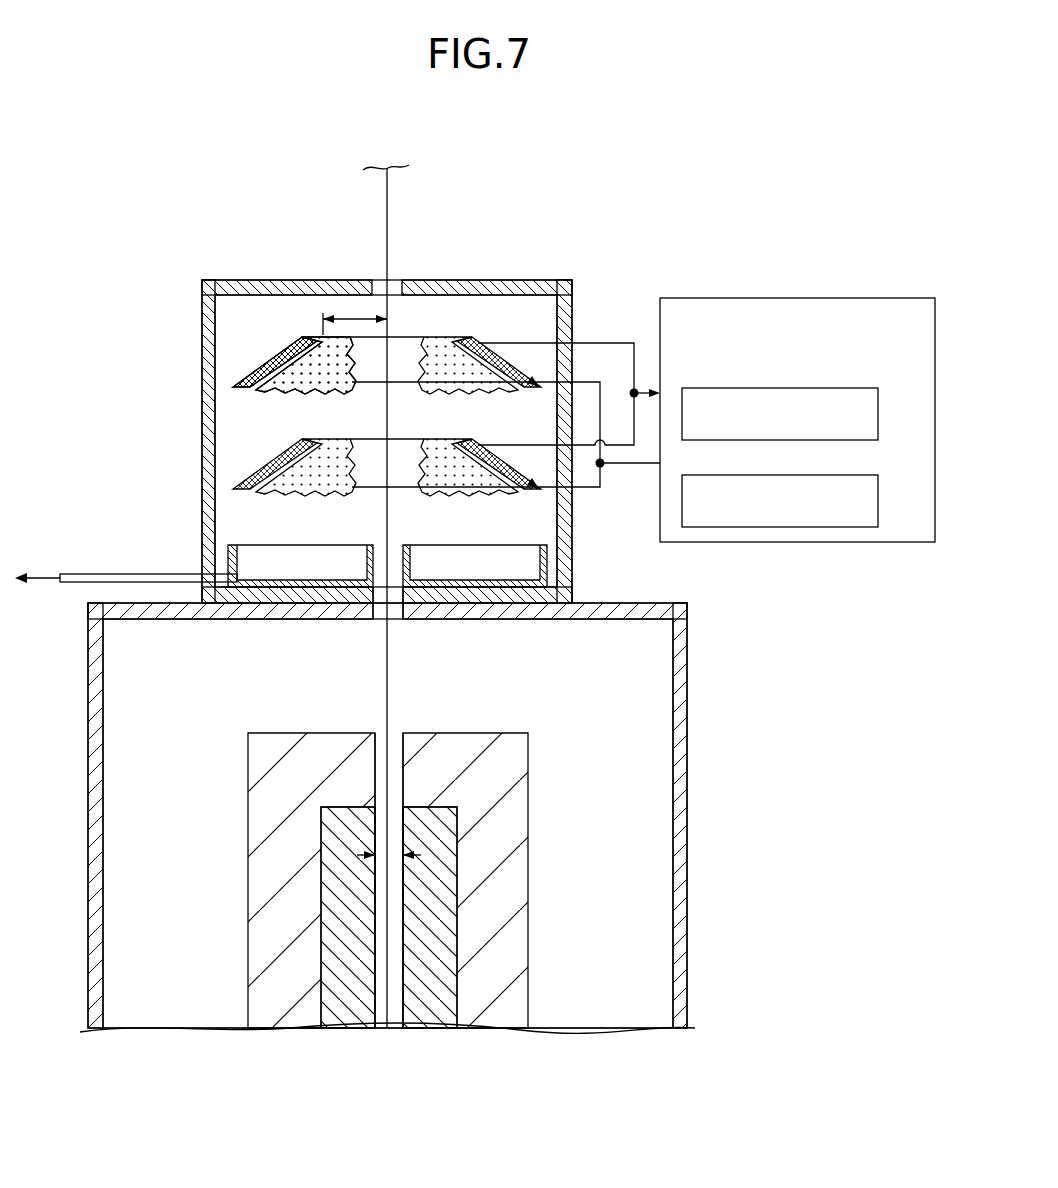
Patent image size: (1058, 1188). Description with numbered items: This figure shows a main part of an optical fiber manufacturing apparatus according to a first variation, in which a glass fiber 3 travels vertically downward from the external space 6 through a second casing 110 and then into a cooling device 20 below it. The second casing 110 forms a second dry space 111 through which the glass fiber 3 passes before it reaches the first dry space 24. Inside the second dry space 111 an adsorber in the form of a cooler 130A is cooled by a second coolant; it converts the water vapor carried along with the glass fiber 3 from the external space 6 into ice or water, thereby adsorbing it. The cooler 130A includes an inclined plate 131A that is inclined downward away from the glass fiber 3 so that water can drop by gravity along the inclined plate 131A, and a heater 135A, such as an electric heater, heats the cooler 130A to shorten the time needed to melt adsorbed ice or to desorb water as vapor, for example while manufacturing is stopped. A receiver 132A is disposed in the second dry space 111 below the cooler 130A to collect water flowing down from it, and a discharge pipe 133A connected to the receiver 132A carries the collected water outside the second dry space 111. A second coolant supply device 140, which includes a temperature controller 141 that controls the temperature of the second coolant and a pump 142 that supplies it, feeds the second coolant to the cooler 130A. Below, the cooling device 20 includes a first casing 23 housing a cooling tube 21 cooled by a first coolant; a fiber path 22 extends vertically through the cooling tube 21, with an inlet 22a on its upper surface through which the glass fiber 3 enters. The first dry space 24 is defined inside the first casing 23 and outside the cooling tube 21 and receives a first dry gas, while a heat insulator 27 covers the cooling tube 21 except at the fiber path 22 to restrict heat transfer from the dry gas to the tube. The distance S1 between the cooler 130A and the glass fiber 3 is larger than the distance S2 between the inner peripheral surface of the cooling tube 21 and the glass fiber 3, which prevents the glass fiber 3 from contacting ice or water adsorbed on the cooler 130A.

The glass fiber 3 is at (388, 195).
The external space 6 is at (201, 257).
The cooling device 20 is at (703, 775).
The cooling tube 21 is at (445, 907).
The fiber path 22 is at (400, 978).
The inlet 22a is at (405, 832).
The first casing 23 is at (682, 920).
The first dry space 24 is at (152, 819).
The heat insulator 27 is at (255, 914).
The second casing 110 is at (535, 280).
The second dry space 111 is at (265, 445).
The cooler 130A is at (313, 326).
The inclined plate 131A is at (277, 392).
The receiver 132A is at (547, 568).
The discharge pipe 133A is at (122, 573).
The heater 135A is at (262, 373).
The second coolant supply device 140 is at (848, 287).
The temperature controller 141 is at (838, 387).
The pump 142 is at (838, 474).
The distance between cooler and glass fiber S1 is at (354, 317).
The distance between cooling tube inner surface and glass fiber S2 is at (378, 852).